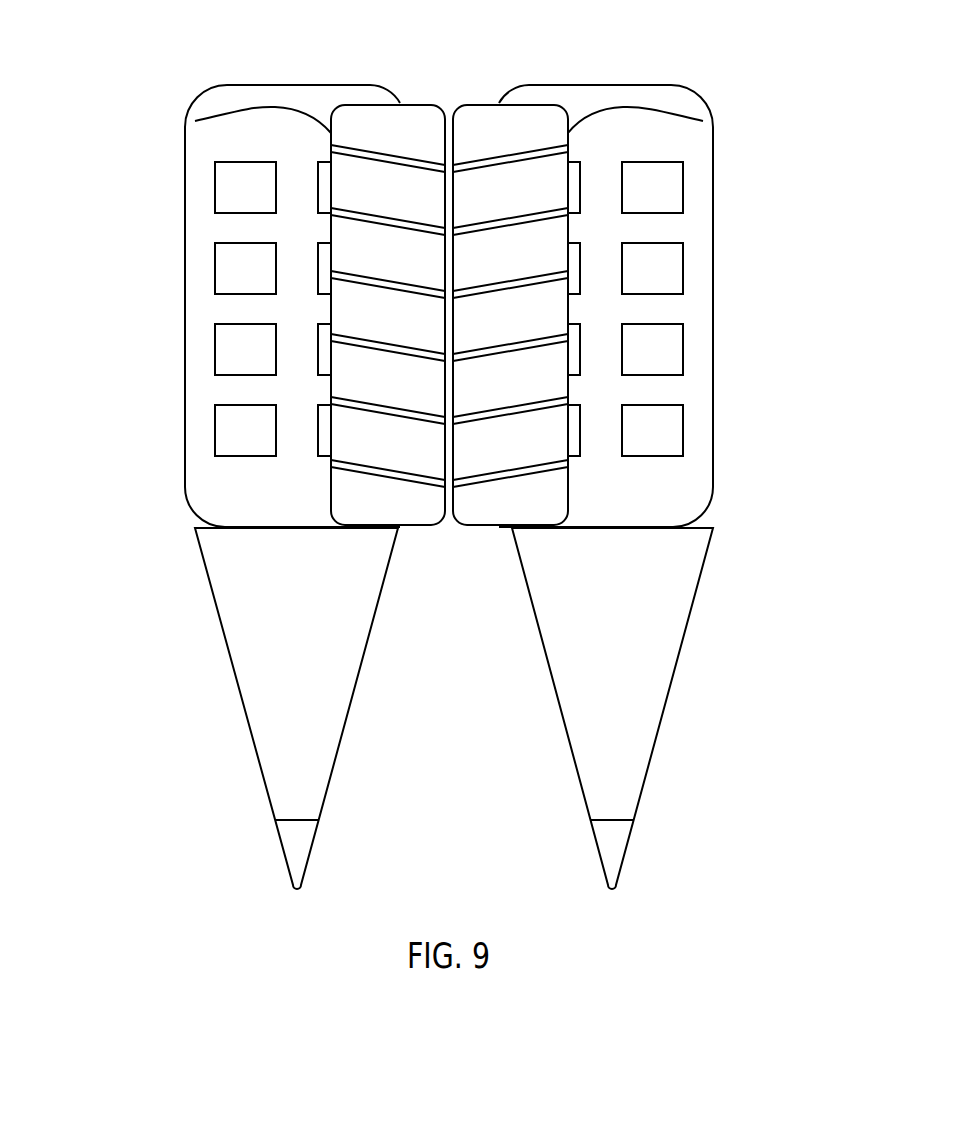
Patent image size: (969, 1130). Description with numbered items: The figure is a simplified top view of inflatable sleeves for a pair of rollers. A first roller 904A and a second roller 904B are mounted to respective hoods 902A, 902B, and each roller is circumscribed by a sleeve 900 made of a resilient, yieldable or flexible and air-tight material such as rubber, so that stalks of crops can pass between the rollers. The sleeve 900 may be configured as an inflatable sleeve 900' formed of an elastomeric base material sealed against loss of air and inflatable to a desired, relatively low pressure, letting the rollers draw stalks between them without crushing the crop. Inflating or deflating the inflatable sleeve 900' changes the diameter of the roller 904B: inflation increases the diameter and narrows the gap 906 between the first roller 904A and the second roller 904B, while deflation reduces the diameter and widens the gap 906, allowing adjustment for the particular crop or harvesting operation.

The sleeve 900 is at (249, 460).
The inflatable sleeve 900' is at (653, 460).
The hood 902A is at (216, 264).
The hood 902B is at (684, 312).
The first roller 904A is at (398, 100).
The second roller 904B is at (492, 98).
The gap 906 is at (445, 532).